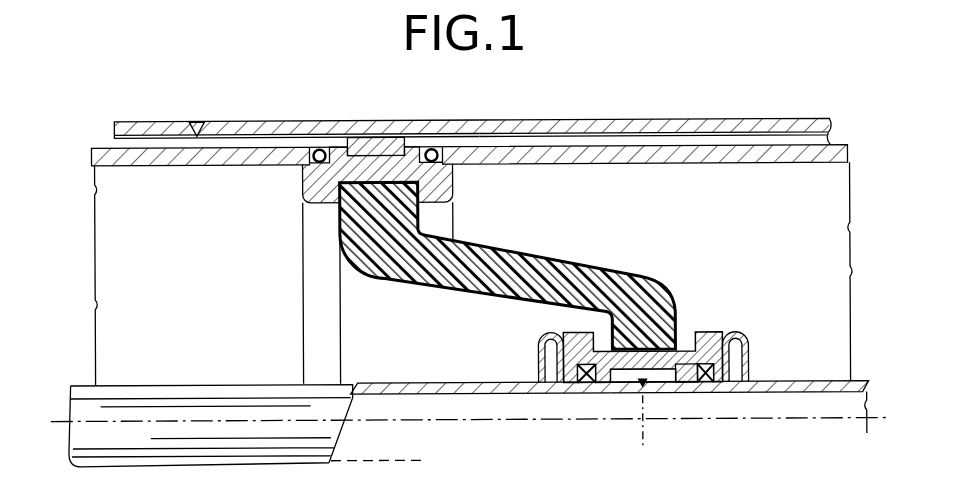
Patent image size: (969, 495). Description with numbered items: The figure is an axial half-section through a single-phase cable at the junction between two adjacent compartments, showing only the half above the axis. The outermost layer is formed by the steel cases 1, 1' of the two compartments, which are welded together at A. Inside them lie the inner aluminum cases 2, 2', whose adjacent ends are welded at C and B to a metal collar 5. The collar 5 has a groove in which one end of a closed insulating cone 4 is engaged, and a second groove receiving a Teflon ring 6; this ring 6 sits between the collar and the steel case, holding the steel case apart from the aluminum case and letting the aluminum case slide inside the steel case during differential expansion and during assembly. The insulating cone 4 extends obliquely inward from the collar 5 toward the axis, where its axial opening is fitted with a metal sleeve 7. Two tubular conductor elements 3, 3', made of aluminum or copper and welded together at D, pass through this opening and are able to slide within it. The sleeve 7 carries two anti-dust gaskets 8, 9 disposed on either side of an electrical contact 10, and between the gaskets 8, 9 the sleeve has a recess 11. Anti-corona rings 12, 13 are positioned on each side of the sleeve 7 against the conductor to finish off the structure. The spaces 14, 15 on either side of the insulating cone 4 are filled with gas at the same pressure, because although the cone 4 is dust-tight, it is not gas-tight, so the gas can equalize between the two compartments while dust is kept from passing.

The steel case 1 is at (296, 103).
The steel case 1' is at (655, 103).
The inner aluminum case 2 is at (219, 187).
The inner aluminum case 2' is at (625, 183).
The conductor element 3 is at (340, 424).
The conductor element 3' is at (740, 419).
The closed insulating cone 4 is at (427, 258).
The metal collar 5 is at (310, 192).
The Teflon ring 6 is at (377, 145).
The metal sleeve 7 is at (708, 332).
The anti-dust gasket 8 is at (576, 385).
The anti-dust gasket 9 is at (707, 393).
The electrical contact 10 is at (697, 385).
The recess 11 is at (633, 377).
The anti-corona ring 12 is at (540, 352).
The anti-corona ring 13 is at (750, 347).
The space 14 is at (193, 292).
The space 15 is at (758, 258).
The weld A is at (198, 120).
The weld B is at (435, 148).
The weld C is at (313, 147).
The weld D is at (643, 398).